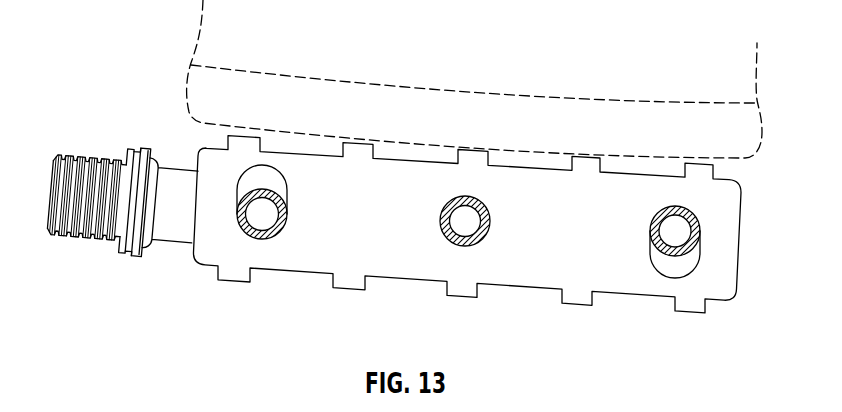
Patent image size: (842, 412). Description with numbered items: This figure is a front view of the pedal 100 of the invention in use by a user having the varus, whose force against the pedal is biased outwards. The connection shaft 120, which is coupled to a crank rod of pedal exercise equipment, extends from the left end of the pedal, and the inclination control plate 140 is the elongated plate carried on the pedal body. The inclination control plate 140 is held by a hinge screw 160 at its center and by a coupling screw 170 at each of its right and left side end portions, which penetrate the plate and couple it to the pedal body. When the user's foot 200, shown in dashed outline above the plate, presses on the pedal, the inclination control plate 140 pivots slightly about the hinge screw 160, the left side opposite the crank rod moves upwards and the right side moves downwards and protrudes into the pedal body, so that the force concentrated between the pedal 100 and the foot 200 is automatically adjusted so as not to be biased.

The pedal 100 is at (393, 240).
The connection shaft 120 is at (177, 227).
The inclination control plate 140 is at (535, 272).
The hinge screw 160 is at (464, 227).
The coupling screw 170 is at (257, 211).
The foot 200 is at (595, 115).